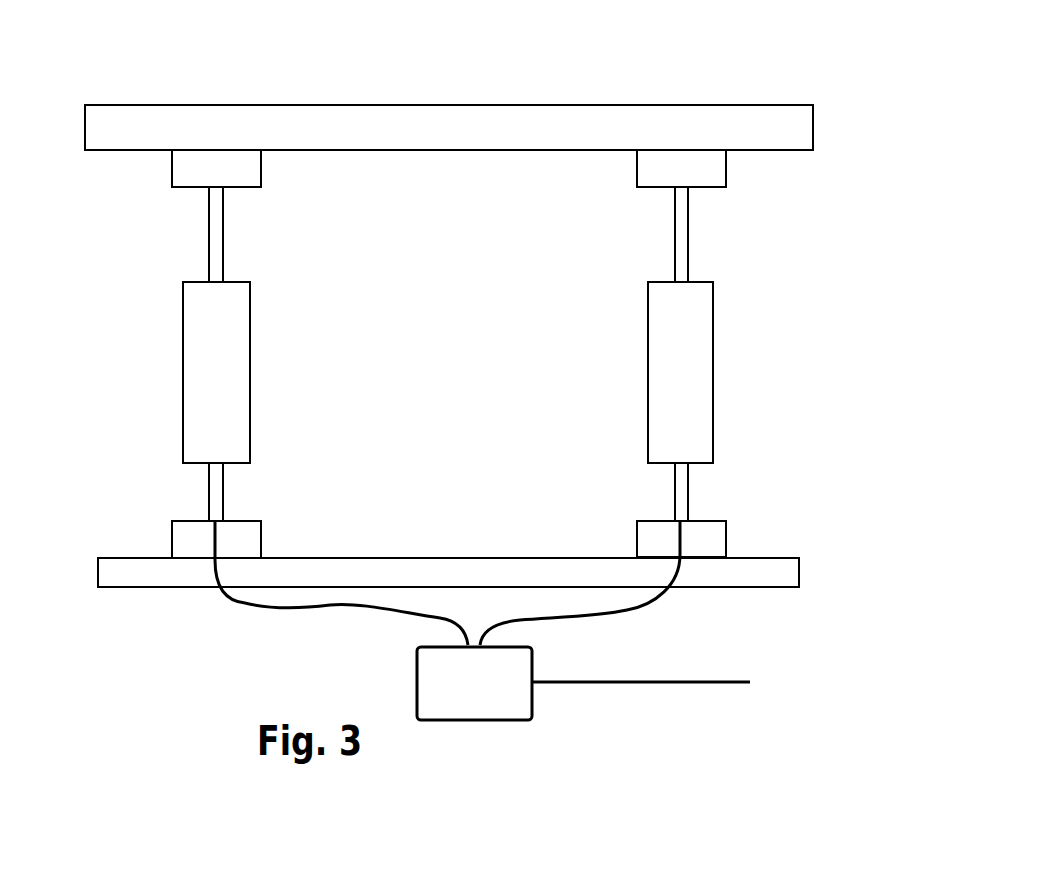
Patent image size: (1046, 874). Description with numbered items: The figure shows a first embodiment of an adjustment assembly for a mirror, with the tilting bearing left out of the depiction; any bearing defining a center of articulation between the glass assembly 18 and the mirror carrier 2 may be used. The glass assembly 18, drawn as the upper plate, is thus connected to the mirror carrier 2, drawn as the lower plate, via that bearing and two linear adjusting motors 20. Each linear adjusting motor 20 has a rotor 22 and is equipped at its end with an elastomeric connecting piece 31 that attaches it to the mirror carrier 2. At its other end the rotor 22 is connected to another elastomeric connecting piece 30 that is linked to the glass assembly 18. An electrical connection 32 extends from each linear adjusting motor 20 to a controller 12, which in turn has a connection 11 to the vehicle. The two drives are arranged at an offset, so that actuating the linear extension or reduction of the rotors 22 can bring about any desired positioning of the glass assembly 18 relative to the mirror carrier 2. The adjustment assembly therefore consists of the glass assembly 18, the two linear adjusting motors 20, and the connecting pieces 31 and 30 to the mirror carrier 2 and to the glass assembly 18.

The glass assembly 18 is at (327, 133).
The elastomeric connecting piece 30 is at (247, 173).
The rotor 22 is at (220, 243).
The linear adjusting motor 20 is at (222, 380).
The elastomeric connecting piece 31 is at (242, 542).
The mirror carrier 2 is at (153, 588).
The electrical connection 32 is at (383, 613).
The controller 12 is at (508, 673).
The connection 11 is at (657, 684).